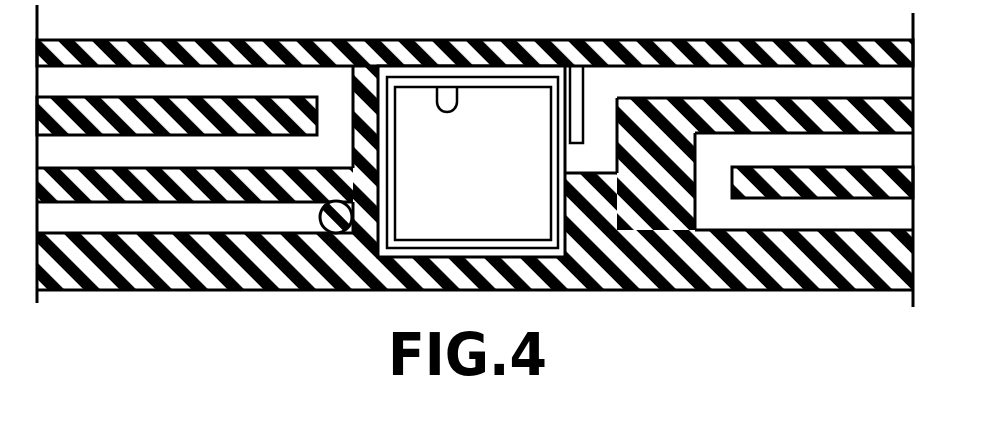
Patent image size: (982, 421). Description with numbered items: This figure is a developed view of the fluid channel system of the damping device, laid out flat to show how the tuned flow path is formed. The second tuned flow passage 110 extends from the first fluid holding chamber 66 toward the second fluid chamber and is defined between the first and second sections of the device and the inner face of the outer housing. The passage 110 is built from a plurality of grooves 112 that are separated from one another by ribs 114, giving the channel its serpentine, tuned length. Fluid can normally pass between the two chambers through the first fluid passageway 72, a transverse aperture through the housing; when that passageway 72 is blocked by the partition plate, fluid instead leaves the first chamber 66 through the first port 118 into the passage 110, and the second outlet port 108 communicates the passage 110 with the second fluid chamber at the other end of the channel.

The first fluid holding chamber 66 is at (489, 219).
The first fluid passageway 72 is at (452, 100).
The second outlet port 108 is at (563, 172).
The second tuned flow passage 110 is at (716, 84).
The grooves 112 is at (192, 78).
The ribs 114 is at (193, 189).
The first port 118 is at (351, 235).